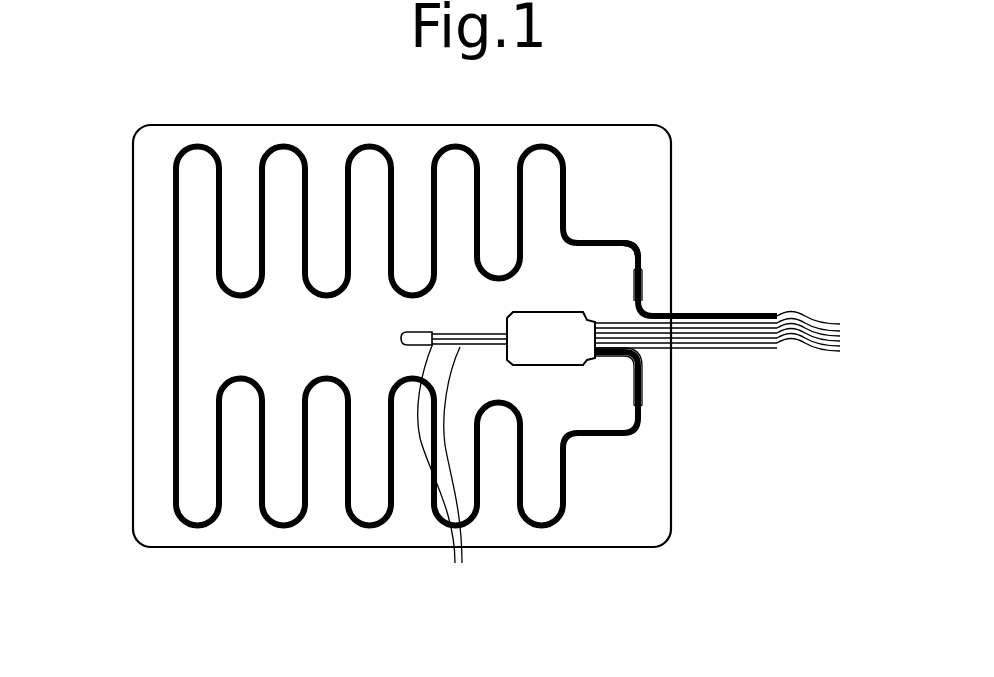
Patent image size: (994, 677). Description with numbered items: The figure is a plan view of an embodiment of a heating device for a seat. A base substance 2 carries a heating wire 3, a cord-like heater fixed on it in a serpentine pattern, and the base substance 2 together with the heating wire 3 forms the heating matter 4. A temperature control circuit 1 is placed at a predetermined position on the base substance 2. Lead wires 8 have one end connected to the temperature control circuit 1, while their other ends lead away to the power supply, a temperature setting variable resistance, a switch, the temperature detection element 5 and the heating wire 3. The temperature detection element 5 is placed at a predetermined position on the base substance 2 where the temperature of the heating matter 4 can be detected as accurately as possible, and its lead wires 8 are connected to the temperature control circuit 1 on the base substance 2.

The temperature control circuit 1 is at (558, 352).
The base substance 2 is at (645, 240).
The heating wire 3 is at (563, 190).
The heating matter 4 is at (514, 336).
The temperature detection element 5 is at (401, 337).
The lead wires 8 is at (640, 385).